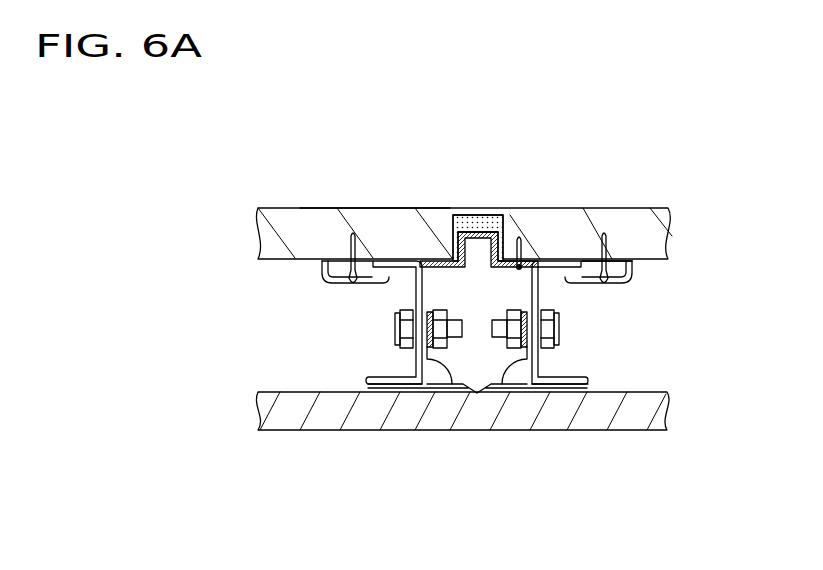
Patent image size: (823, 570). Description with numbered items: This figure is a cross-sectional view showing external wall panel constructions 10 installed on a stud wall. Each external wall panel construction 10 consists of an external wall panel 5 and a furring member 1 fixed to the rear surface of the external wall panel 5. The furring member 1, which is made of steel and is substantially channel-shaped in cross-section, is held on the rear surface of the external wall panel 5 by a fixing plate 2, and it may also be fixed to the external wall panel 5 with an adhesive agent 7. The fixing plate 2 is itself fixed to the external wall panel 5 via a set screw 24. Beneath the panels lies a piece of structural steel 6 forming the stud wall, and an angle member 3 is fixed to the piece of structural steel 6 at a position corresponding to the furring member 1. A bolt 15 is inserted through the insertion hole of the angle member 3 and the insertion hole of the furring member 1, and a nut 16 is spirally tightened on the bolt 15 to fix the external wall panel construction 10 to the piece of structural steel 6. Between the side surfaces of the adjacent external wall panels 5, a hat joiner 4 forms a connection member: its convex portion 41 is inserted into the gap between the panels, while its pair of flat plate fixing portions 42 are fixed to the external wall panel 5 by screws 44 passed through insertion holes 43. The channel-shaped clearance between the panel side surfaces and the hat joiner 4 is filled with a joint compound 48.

The furring member 1 is at (405, 287).
The fixing plate 2 is at (640, 275).
The angle member 3 is at (457, 387).
The hat joiner 4 is at (447, 260).
The external wall panel 5 is at (290, 228).
The piece of structural steel 6 is at (290, 405).
The adhesive agent 7 is at (380, 208).
The external wall panel construction 10 is at (686, 174).
The bolt 15 is at (560, 332).
The nut 16 is at (517, 332).
The set screw 24 is at (607, 250).
The convex portion 41 is at (478, 215).
The flat plate fixing portions 42 is at (523, 262).
The insertion holes 43 is at (447, 227).
The screws 44 is at (521, 236).
The joint compound 48 is at (470, 213).